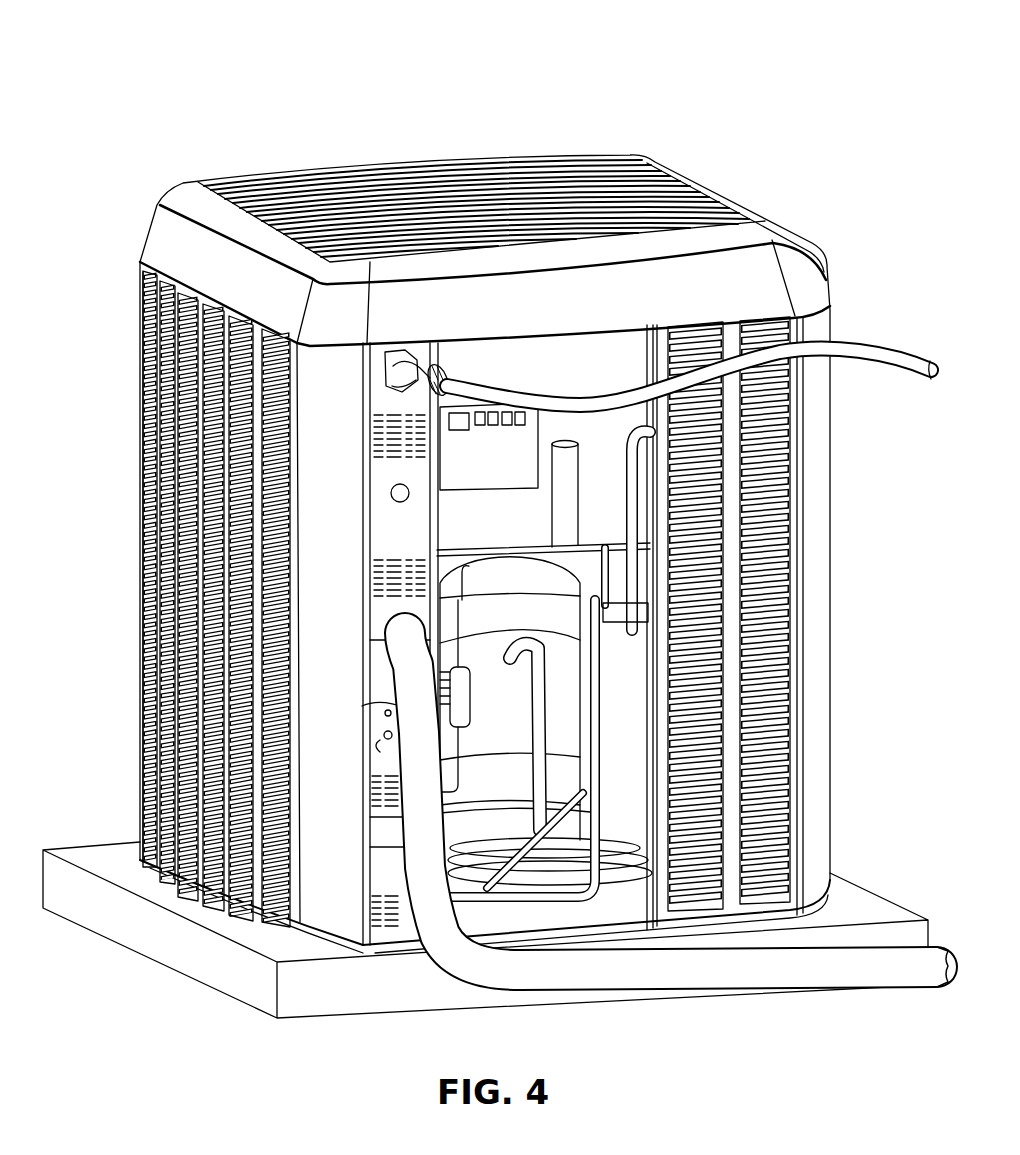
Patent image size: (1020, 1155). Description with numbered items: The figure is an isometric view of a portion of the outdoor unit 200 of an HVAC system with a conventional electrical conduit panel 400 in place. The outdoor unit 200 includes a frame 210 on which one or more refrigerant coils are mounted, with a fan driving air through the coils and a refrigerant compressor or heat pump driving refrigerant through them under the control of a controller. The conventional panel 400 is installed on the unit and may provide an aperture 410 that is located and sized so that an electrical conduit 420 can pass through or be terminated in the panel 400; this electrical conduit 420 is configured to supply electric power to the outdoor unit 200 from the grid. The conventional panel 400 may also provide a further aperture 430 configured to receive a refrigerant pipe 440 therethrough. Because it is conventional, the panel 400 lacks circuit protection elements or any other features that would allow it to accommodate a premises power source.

The outdoor unit 200 is at (362, 69).
The frame 210 is at (826, 283).
The conventional electrical conduit panel 400 is at (432, 532).
The aperture 410 is at (407, 347).
The electrical conduit 420 is at (587, 393).
The aperture 430 is at (385, 627).
The refrigerant pipe 440 is at (370, 704).